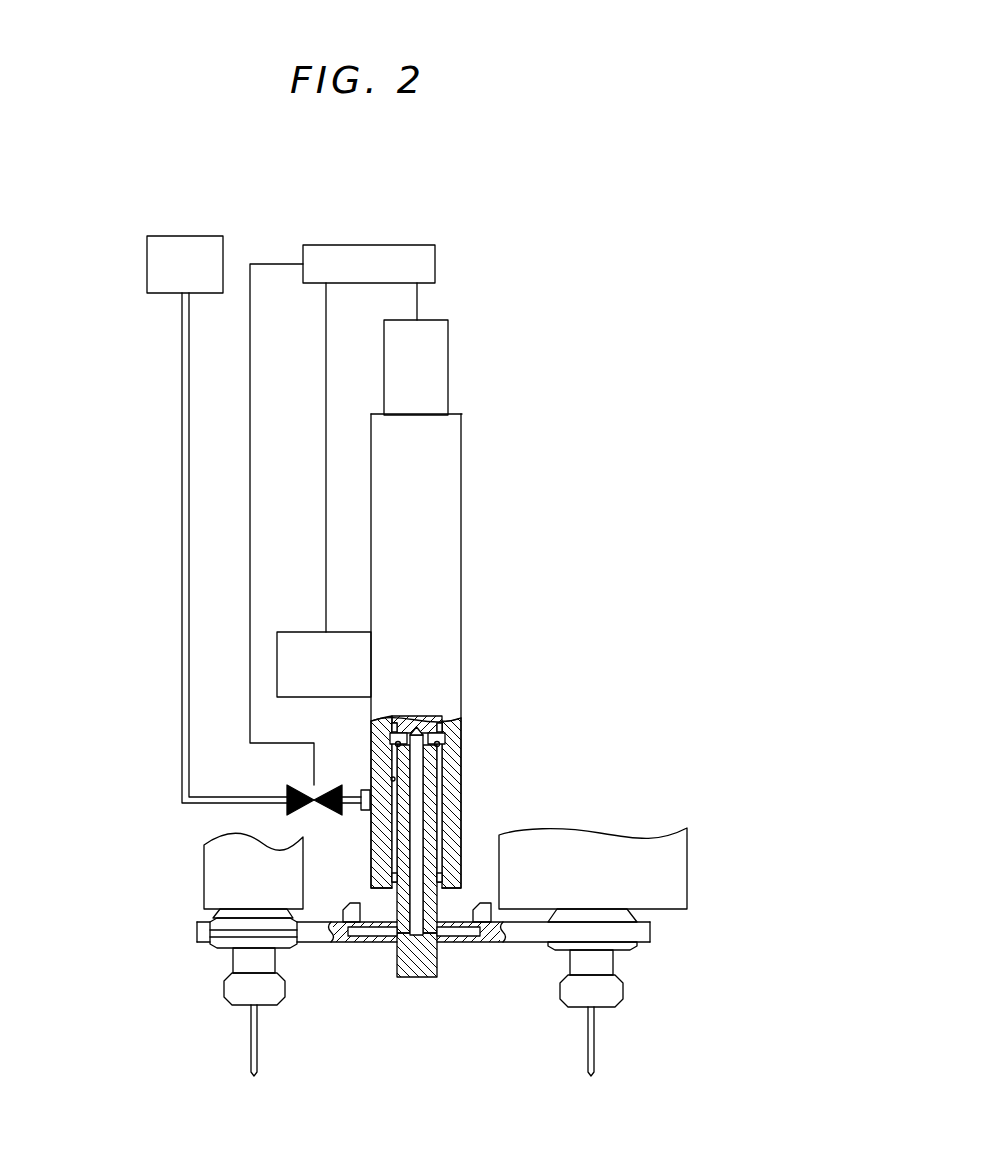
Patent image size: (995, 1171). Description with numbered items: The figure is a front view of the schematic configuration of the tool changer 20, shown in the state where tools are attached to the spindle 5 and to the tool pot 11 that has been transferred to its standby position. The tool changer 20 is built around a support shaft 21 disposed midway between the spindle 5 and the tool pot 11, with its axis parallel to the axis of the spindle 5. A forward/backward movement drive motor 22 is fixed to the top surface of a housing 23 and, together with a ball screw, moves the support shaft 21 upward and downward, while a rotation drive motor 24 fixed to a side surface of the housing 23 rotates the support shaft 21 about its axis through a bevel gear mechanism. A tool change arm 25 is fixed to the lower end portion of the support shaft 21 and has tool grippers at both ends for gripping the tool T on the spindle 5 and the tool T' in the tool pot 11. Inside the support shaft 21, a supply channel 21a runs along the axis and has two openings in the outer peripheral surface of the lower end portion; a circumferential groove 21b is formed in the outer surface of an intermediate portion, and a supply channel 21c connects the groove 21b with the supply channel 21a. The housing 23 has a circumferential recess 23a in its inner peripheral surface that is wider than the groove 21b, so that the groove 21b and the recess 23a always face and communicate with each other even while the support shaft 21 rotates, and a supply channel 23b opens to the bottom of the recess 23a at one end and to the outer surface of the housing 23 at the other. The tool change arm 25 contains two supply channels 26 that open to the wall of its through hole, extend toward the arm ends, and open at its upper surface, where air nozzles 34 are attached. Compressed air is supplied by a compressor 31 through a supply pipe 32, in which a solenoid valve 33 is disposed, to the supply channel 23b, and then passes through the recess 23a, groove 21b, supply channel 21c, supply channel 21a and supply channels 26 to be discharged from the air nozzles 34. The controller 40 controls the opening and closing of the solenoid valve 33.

The spindle 5 is at (678, 868).
The tool pot 11 is at (213, 868).
The tool changer 20 is at (634, 597).
The support shaft 21 is at (432, 817).
The supply channel 21a is at (452, 761).
The groove 21b is at (440, 740).
The supply channel 21c is at (392, 744).
The forward/backward movement drive motor 22 is at (445, 363).
The housing 23 is at (378, 415).
The recess 23a is at (393, 778).
The supply channel 23b is at (383, 801).
The rotation drive motor 24 is at (315, 638).
The tool change arm 25 is at (502, 933).
The supply channels 26 is at (375, 930).
The compressor 31 is at (148, 265).
The supply pipe 32 is at (186, 757).
The solenoid valve 33 is at (288, 792).
The air nozzles 34 is at (355, 908).
The controller 40 is at (317, 245).
The tool T is at (672, 990).
The tool T' is at (177, 998).